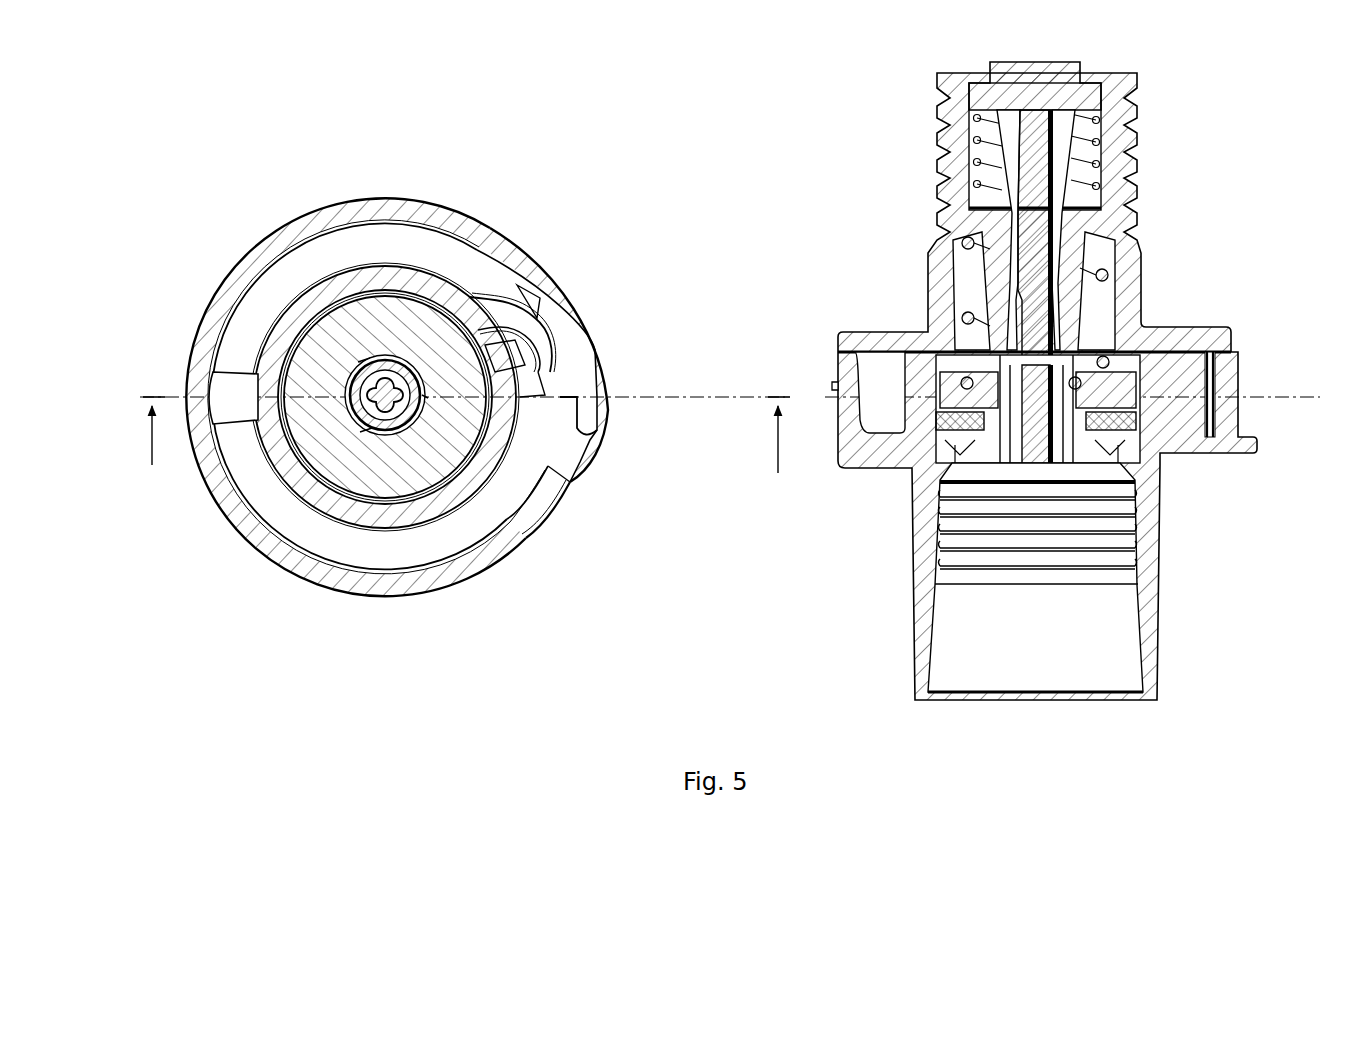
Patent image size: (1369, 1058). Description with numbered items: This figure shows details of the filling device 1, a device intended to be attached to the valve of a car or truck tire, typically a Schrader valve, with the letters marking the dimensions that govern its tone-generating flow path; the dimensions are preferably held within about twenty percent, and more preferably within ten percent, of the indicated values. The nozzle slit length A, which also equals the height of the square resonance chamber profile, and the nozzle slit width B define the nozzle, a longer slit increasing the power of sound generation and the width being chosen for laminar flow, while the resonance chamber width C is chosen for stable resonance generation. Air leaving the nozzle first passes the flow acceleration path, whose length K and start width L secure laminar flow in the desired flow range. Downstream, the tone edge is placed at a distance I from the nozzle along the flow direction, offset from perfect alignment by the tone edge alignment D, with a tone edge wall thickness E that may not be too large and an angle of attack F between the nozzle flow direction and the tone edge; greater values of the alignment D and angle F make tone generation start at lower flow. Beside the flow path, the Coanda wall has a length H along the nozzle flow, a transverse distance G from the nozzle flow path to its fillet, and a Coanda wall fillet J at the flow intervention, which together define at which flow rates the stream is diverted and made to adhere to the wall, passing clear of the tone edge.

The filling device 1 is at (238, 115).
The nozzle slit length A is at (830, 397).
The nozzle slit width B is at (1190, 492).
The resonance chamber width C is at (906, 345).
The tone edge alignment with nozzle flow direction D is at (560, 452).
The tone edge wall thickness E is at (545, 455).
The angle of attack between nozzle flow direction and tone edge F is at (567, 483).
The distance from nozzle flow path to Coanda wall fillet transverse to flow G is at (540, 450).
The length of Coanda wall along nozzle flow H is at (580, 426).
The distance from nozzle to tone edge along flow direction I is at (567, 483).
The Coanda wall fillet at flow intervention J is at (578, 426).
The length of flow acceleration path K is at (557, 322).
The start width of flow acceleration path L is at (547, 375).